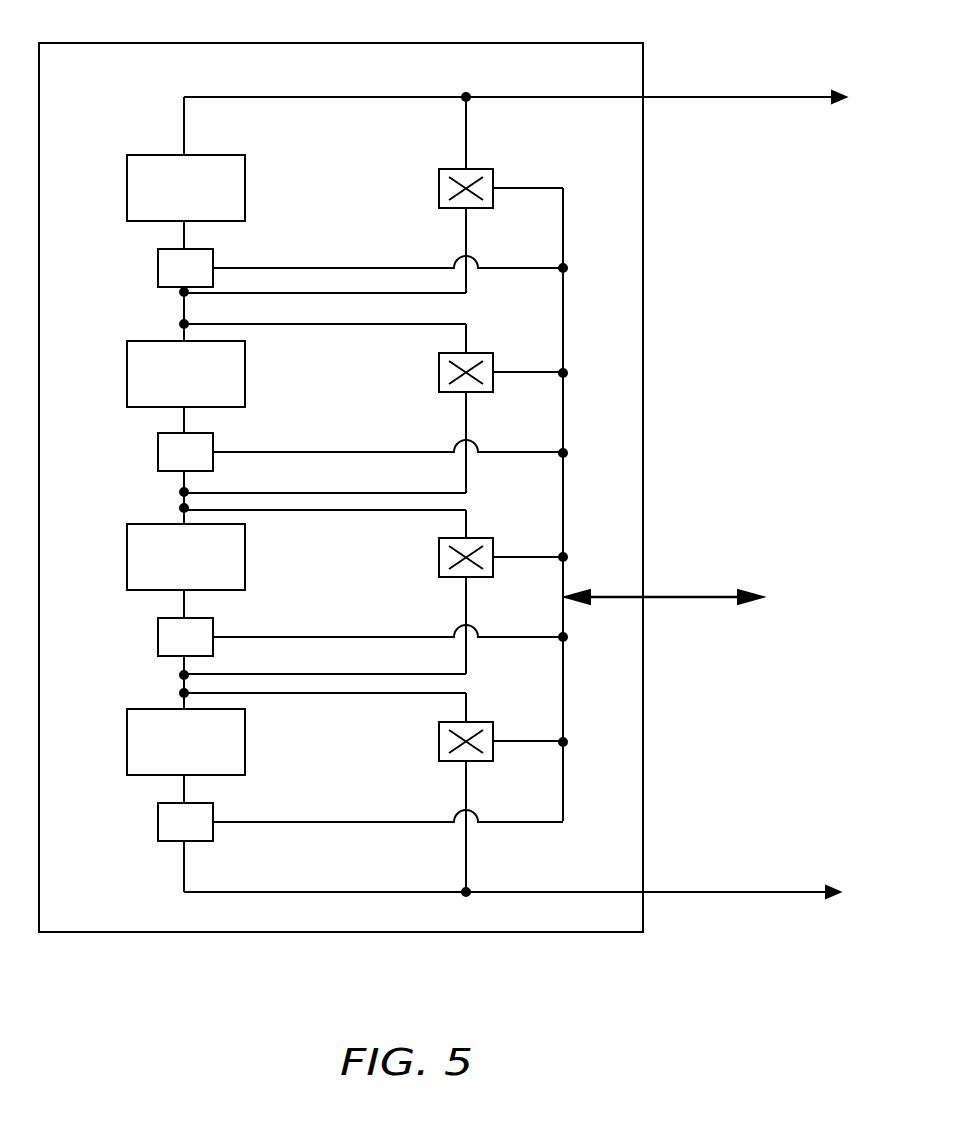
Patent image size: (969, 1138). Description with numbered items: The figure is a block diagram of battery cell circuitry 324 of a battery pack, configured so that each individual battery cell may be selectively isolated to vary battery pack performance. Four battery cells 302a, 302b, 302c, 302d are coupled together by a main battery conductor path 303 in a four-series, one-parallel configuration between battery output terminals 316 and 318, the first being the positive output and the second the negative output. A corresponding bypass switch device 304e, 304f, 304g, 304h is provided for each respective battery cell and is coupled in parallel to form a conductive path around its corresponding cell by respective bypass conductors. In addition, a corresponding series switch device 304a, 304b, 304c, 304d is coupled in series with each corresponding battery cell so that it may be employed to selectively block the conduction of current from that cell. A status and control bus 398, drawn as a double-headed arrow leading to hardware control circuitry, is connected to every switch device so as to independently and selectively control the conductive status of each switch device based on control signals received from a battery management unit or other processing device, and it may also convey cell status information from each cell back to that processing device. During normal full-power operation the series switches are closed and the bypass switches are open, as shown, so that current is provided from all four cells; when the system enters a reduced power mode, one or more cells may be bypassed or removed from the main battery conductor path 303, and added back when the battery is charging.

The battery cell circuitry 324 is at (165, 43).
The main battery conductor path 303 is at (258, 97).
The battery cell 302a is at (127, 187).
The battery cell 302b is at (127, 373).
The battery cell 302c is at (127, 556).
The battery cell 302d is at (127, 741).
The switch device 304a is at (158, 268).
The switch device 304b is at (158, 452).
The switch device 304c is at (158, 637).
The switch device 304d is at (158, 822).
The switch device 304e is at (439, 188).
The switch device 304f is at (439, 372).
The switch device 304g is at (439, 557).
The switch device 304h is at (439, 741).
The battery output terminal 316 is at (740, 98).
The battery output terminal 318 is at (727, 893).
The status and control bus 398 is at (713, 598).